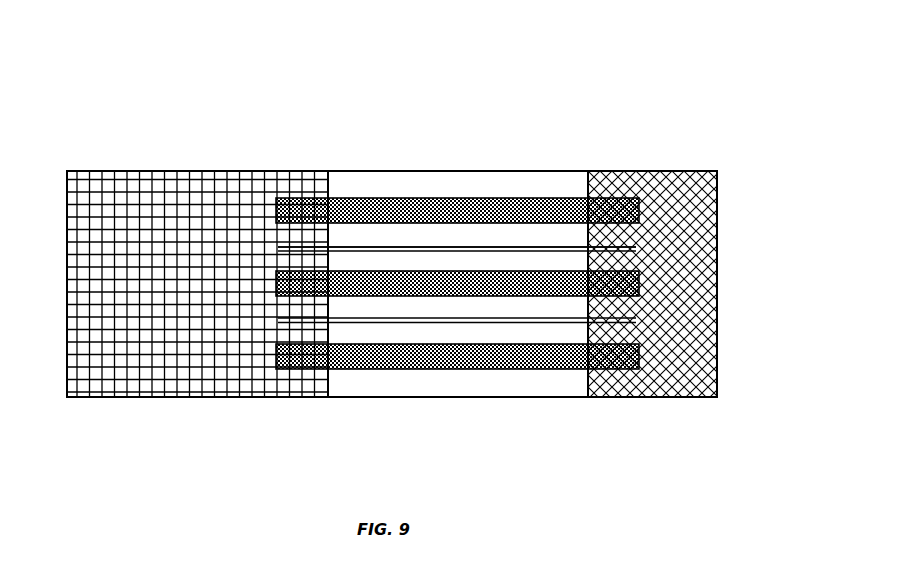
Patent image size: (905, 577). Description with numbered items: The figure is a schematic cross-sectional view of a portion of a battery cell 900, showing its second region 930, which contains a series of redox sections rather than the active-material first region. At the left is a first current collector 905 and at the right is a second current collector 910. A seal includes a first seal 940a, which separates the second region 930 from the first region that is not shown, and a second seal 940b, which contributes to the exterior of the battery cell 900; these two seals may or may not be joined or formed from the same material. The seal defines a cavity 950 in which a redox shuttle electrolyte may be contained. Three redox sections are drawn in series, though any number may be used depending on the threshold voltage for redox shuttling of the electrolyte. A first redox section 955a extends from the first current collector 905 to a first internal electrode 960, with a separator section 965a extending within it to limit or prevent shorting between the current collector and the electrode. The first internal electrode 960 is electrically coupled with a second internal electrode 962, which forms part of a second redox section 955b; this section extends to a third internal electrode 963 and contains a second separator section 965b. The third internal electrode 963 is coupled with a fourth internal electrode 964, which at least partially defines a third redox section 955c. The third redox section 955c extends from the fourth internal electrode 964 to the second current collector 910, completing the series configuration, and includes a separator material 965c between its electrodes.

The battery cell 900 is at (128, 63).
The first current collector 905 is at (218, 171).
The second current collector 910 is at (270, 397).
The second region 930 is at (578, 171).
The first seal 940a is at (677, 398).
The second seal 940b is at (120, 397).
The cavity 950 is at (587, 398).
The first redox section 955a is at (358, 171).
The second redox section 955b is at (590, 311).
The third redox section 955c is at (358, 397).
The first internal electrode 960 is at (463, 243).
The second internal electrode 962 is at (373, 247).
The third internal electrode 963 is at (472, 320).
The fourth internal electrode 964 is at (537, 323).
The separator section 965a is at (640, 205).
The second separator section 965b is at (640, 288).
The separator material 965c is at (390, 369).